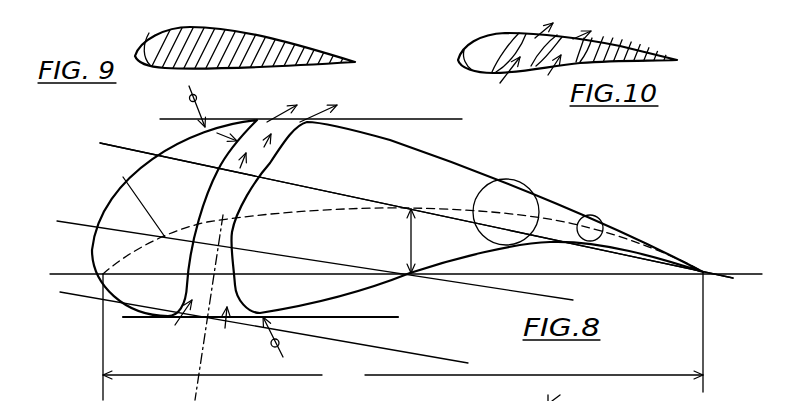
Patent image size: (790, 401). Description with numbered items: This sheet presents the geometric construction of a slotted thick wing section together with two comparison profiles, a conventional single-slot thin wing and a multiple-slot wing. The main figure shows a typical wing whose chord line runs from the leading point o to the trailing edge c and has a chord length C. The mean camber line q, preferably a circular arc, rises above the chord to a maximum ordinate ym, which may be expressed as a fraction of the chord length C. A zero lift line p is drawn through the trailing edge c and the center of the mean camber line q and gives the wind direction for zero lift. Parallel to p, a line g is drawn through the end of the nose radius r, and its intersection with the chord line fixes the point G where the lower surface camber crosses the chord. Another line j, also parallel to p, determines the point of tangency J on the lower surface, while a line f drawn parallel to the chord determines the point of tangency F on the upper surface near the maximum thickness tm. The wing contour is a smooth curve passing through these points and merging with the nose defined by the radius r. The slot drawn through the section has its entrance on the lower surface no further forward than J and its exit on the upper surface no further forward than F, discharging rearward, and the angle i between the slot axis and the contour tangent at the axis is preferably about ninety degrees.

The point of tangency J is at (180, 313).
The chord line end point o is at (406, 285).
The zero lift line p is at (99, 144).
The nose radius r is at (144, 207).
The line parallel to chord f is at (445, 119).
The maximum thickness tm is at (185, 106).
The point of tangency F is at (258, 120).
The mean camber line q is at (389, 208).
The maximum ordinate ym is at (395, 241).
The trailing edge c is at (709, 264).
The lower surface crossing point G is at (377, 309).
The line parallel to zero lift line g is at (560, 298).
The line parallel to zero lift line j is at (433, 356).
The slot angle i is at (202, 372).
The chord length C is at (403, 336).